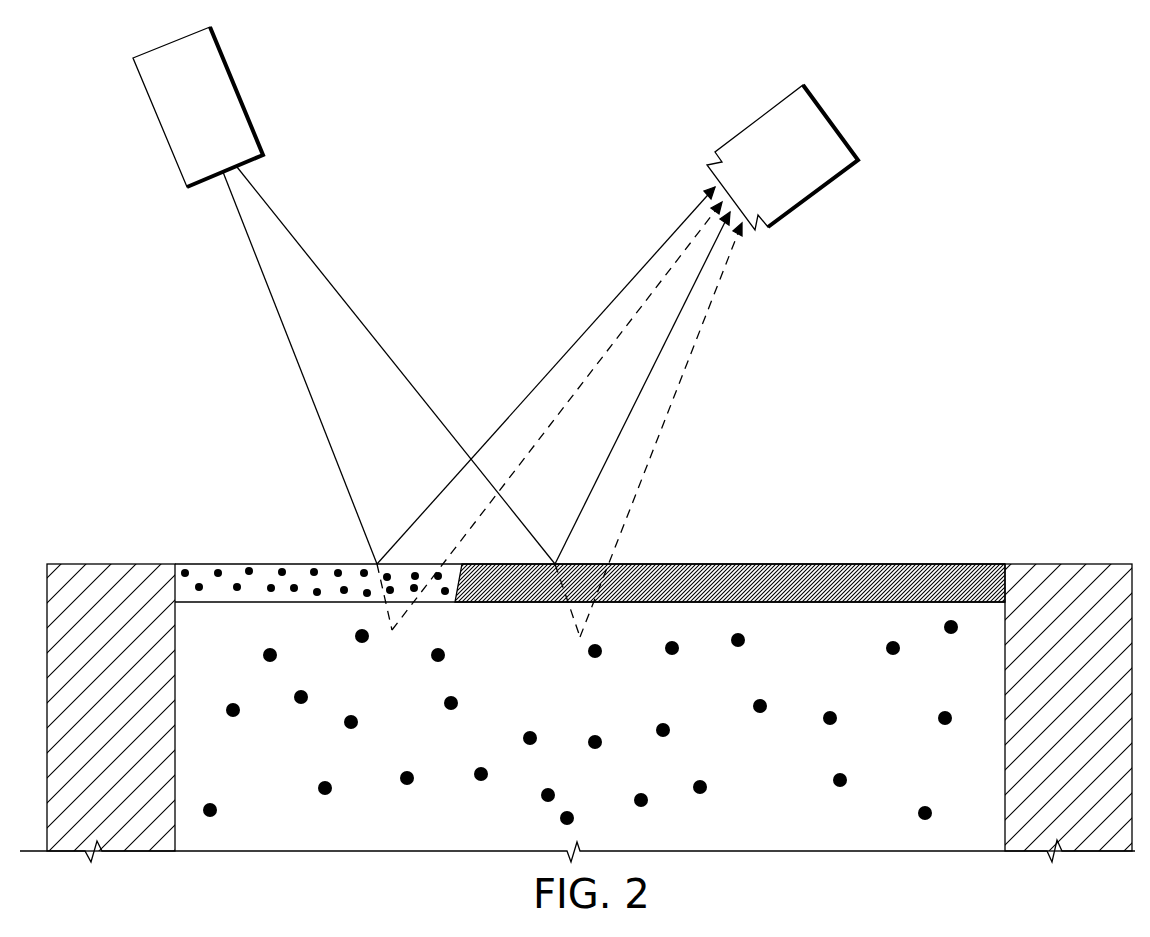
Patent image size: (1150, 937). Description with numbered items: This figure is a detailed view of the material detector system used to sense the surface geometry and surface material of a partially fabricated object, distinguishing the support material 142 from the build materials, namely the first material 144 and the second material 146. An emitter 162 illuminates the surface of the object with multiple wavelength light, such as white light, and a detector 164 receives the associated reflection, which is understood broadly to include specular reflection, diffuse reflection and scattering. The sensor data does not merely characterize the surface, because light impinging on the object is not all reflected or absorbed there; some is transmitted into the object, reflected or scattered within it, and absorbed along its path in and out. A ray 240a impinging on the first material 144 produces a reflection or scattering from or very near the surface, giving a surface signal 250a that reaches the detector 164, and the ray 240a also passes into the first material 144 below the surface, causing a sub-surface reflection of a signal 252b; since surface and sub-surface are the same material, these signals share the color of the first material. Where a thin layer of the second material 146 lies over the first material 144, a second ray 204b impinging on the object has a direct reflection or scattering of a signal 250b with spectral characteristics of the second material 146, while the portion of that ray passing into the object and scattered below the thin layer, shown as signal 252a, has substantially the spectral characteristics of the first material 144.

The support material 142 is at (131, 732).
The first material 144 is at (612, 801).
The second material 146 is at (812, 570).
The emitter 162 is at (220, 120).
The detector 164 is at (800, 172).
The second light beam 204b is at (317, 267).
The ray 240a is at (352, 430).
The surface signal 250a is at (530, 393).
The signal 250b is at (603, 467).
The first scattered light 252a is at (528, 447).
The signal 252b is at (630, 513).